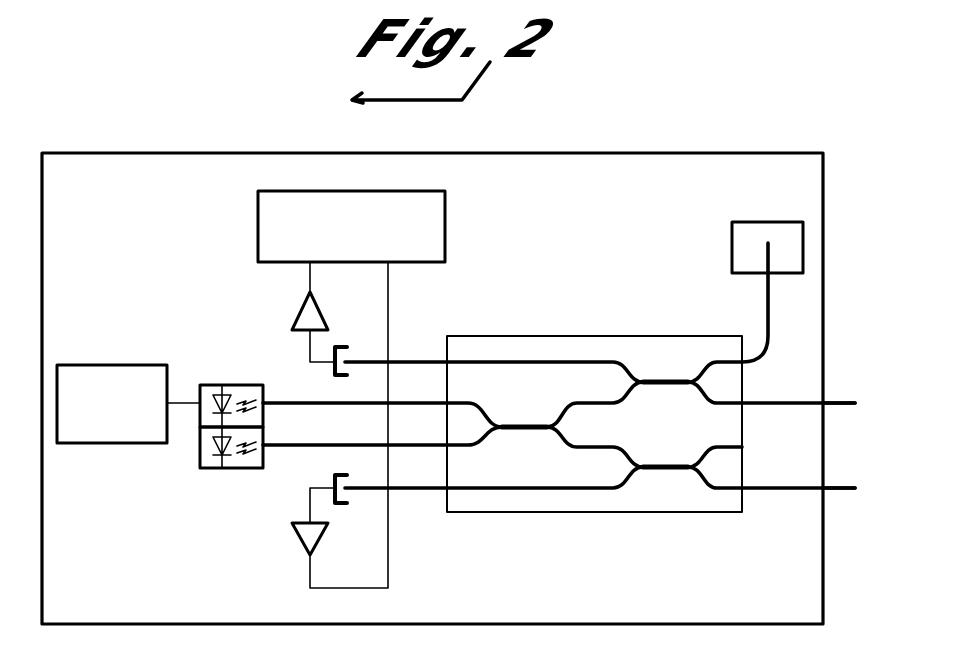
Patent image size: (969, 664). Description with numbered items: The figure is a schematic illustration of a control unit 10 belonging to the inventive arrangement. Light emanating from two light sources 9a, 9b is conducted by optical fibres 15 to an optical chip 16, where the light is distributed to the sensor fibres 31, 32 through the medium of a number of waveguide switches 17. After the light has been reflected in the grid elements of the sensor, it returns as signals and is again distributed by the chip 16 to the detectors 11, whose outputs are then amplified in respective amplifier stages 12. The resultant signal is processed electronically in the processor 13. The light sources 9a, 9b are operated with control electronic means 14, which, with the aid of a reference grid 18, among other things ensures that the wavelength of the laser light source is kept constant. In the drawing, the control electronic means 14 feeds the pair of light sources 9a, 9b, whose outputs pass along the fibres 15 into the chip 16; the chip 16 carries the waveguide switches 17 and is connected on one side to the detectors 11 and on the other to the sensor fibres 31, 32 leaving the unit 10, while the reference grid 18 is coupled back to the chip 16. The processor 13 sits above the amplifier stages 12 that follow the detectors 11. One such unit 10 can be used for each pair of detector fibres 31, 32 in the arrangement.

The unit 10 is at (210, 150).
The processor 13 is at (266, 211).
The amplifier stage 12 is at (297, 313).
The control electronic means 14 is at (117, 370).
The light source 9a is at (231, 385).
The light source 9b is at (222, 468).
The detector 11 is at (335, 370).
The optical fibres 15 is at (427, 445).
The optical chip 16 is at (578, 335).
The waveguide switches 17 is at (668, 470).
The reference grid 18 is at (735, 228).
The sensor fibre 31 is at (843, 398).
The sensor fibre 32 is at (838, 492).